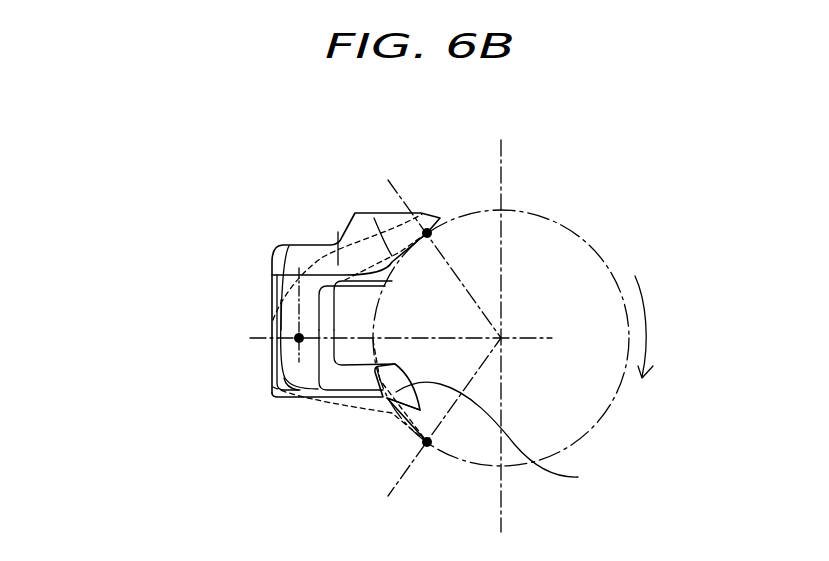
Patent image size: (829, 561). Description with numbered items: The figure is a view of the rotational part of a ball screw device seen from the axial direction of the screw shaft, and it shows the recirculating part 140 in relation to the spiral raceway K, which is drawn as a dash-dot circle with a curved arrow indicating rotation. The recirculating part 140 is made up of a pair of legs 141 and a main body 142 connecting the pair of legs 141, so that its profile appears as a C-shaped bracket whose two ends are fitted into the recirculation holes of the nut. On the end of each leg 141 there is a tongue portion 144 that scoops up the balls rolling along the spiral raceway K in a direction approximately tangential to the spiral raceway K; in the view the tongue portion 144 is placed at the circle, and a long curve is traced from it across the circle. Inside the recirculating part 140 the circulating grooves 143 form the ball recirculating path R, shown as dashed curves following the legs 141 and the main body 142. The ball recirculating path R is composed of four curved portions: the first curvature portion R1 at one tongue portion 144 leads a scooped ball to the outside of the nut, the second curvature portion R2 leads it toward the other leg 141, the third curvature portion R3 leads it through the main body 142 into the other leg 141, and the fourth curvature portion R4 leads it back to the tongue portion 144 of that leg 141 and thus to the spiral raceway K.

The recirculating part 140 is at (360, 329).
The leg 141 is at (337, 397).
The main body 142 is at (272, 301).
The circulating groove 143 is at (284, 358).
The tongue portion 144 is at (505, 436).
The spiral raceway K is at (574, 232).
The ball recirculating path R is at (340, 232).
The first curvature portion R1 is at (392, 413).
The second curvature portion R2 is at (294, 389).
The third curvature portion R3 is at (303, 297).
The fourth curvature portion R4 is at (369, 212).